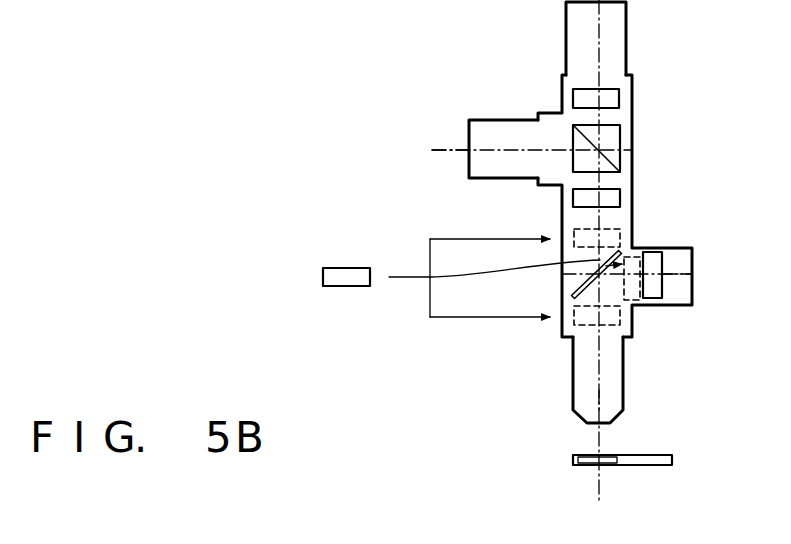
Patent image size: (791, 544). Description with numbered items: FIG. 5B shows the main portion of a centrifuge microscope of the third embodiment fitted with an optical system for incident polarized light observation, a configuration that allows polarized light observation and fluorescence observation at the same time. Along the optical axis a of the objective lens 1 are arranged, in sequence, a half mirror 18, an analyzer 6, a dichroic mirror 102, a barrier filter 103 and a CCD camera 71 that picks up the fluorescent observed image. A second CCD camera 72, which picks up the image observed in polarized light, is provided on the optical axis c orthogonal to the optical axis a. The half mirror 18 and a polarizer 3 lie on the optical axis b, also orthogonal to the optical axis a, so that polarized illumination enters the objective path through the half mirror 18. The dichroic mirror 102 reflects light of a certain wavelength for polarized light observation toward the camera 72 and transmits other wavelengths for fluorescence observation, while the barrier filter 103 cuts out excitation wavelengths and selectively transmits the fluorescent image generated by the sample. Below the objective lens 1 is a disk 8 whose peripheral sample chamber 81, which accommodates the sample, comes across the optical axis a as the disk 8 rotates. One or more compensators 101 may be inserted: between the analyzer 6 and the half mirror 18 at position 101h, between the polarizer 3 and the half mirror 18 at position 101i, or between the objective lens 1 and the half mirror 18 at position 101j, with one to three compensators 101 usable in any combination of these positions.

The objective lens 1 is at (573, 372).
The polarizer 3 is at (654, 262).
The analyzer 6 is at (613, 192).
The disk 8 is at (664, 455).
The sample chamber 81 is at (578, 460).
The half mirror 18 is at (573, 296).
The CCD camera 71 is at (617, 30).
The CCD camera 72 is at (485, 127).
The compensator 101 is at (346, 286).
The compensator position between analyzer and half mirror 101h is at (583, 227).
The compensator position between polarizer and half mirror 101i is at (636, 301).
The compensator position between objective lens and half mirror 101j is at (622, 325).
The dichroic mirror 102 is at (612, 147).
The barrier filter 103 is at (613, 99).
The optical axis a is at (605, 398).
The optical axis b is at (670, 275).
The optical axis c is at (437, 152).